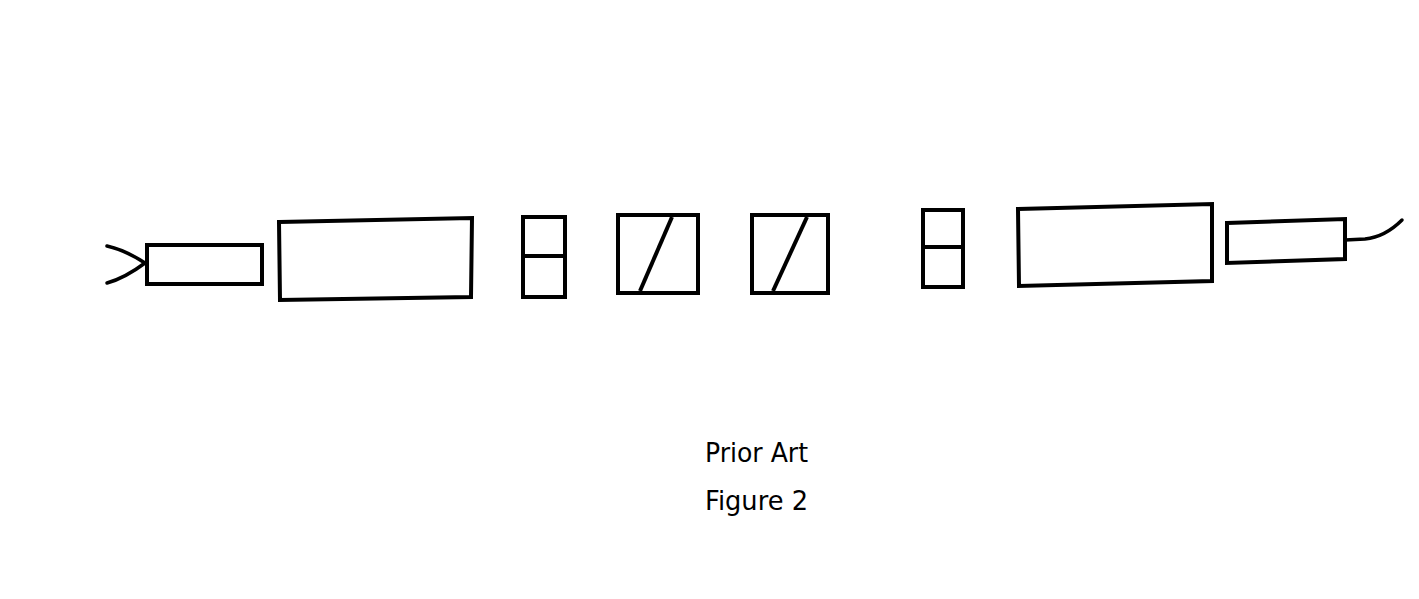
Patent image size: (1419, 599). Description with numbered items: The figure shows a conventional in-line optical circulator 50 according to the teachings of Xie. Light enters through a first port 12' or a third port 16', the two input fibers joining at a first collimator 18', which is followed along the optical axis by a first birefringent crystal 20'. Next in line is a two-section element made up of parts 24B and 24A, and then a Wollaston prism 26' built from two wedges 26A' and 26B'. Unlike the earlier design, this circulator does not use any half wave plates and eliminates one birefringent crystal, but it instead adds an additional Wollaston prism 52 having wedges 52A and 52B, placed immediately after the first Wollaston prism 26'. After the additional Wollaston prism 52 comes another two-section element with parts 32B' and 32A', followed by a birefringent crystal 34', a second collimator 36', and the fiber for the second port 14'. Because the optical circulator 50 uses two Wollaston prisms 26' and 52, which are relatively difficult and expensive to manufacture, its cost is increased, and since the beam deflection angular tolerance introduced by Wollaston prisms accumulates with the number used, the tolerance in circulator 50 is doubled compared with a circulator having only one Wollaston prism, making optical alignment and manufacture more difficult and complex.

The conventional in-line optical circulator 50 is at (766, 33).
The first port 12' is at (152, 217).
The third port 16' is at (156, 299).
The first collimator 18' is at (204, 247).
The first birefringent crystal 20' is at (375, 234).
The first Faraday rotator section 24A is at (545, 297).
The first Faraday rotator section 24B is at (545, 217).
The Wollaston prism 26' is at (682, 205).
The Wollaston prism wedge 26A' is at (671, 226).
The Wollaston prism wedge 26B' is at (693, 280).
The additional Wollaston prism 52 is at (827, 138).
The wedge 52A is at (770, 215).
The wedge 52B is at (788, 293).
The second Faraday rotator section 32A' is at (985, 298).
The second Faraday rotator section 32B' is at (975, 201).
The birefringent crystal 34' is at (1115, 220).
The second collimator 36' is at (1286, 225).
The second port 14' is at (1338, 266).